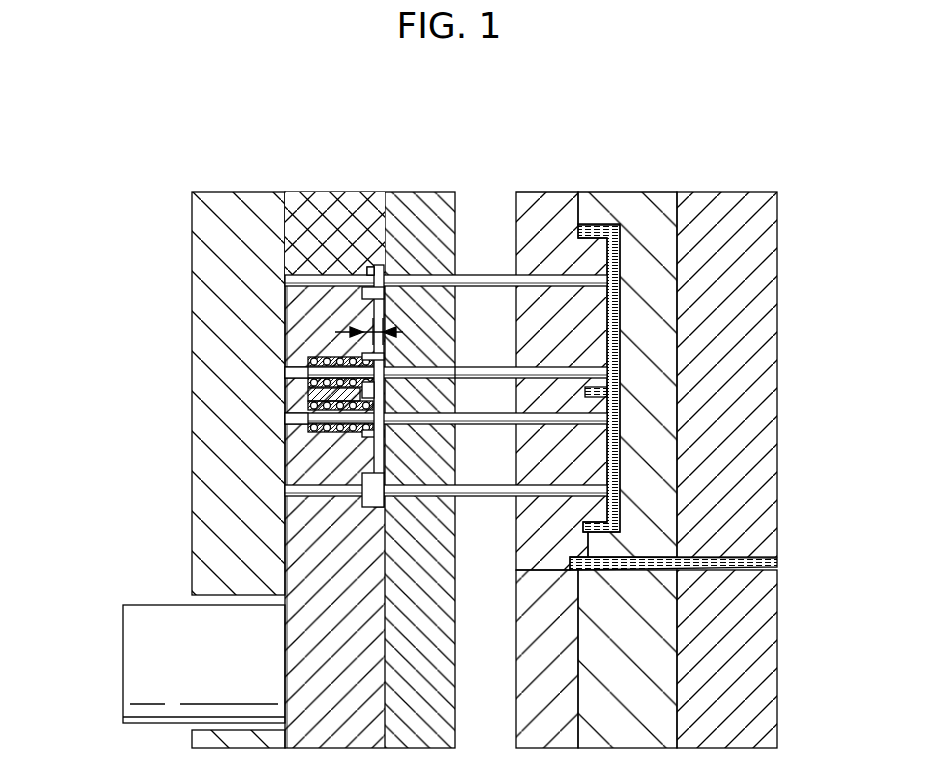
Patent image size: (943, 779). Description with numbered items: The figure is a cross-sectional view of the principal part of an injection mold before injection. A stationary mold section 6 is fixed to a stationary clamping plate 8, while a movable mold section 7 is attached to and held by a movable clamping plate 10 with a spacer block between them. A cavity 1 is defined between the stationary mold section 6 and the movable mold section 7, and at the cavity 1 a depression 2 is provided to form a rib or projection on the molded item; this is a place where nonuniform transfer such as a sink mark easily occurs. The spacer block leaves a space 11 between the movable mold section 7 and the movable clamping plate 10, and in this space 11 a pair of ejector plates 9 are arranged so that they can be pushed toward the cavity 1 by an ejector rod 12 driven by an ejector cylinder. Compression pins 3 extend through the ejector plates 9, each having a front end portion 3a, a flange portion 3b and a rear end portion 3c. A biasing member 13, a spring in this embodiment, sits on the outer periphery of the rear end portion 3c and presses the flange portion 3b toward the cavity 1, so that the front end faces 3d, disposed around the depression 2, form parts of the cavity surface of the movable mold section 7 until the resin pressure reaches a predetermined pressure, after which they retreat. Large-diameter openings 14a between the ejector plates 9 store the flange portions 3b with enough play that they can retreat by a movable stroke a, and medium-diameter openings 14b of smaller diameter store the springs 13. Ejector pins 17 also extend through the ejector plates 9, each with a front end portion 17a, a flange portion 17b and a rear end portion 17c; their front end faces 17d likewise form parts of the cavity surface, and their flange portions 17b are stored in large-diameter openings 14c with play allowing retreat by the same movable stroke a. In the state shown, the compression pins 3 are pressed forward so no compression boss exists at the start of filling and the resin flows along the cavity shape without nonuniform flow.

The cavity 1 is at (622, 243).
The depression 2 is at (590, 398).
The compression pin 3 is at (550, 416).
The front end portion 3a is at (502, 372).
The flange portion 3b is at (455, 345).
The rear end portion 3c is at (305, 358).
The front end face 3d is at (610, 372).
The stationary mold section 6 is at (646, 212).
The movable mold section 7 is at (545, 215).
The stationary clamping plate 8 is at (738, 205).
The ejector plates 9 is at (360, 207).
The movable clamping plate 10 is at (240, 205).
The space 11 is at (470, 298).
The ejector rod 12 is at (150, 667).
The biasing member 13 is at (305, 394).
The large-diameter opening 14a is at (362, 433).
The medium-diameter opening 14b is at (300, 425).
The large-diameter opening 14c is at (360, 268).
The ejector pin 17 is at (487, 283).
The front end portion 17a is at (497, 283).
The flange portion 17b is at (352, 242).
The rear end portion 17c is at (300, 283).
The front end face 17d is at (622, 290).
The movable stroke a is at (362, 320).